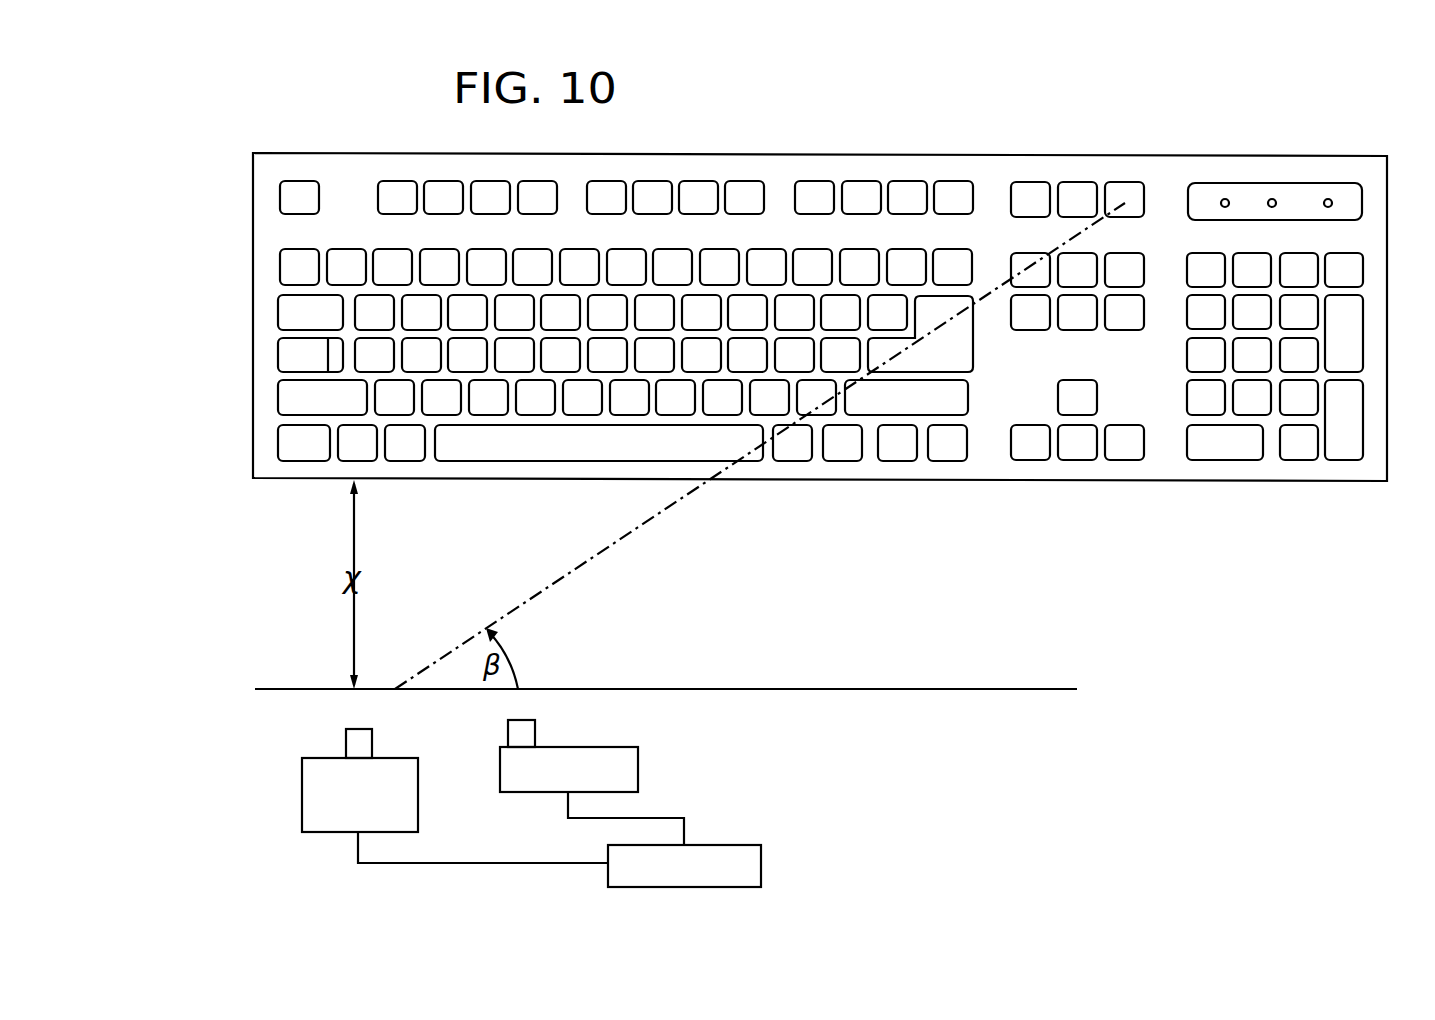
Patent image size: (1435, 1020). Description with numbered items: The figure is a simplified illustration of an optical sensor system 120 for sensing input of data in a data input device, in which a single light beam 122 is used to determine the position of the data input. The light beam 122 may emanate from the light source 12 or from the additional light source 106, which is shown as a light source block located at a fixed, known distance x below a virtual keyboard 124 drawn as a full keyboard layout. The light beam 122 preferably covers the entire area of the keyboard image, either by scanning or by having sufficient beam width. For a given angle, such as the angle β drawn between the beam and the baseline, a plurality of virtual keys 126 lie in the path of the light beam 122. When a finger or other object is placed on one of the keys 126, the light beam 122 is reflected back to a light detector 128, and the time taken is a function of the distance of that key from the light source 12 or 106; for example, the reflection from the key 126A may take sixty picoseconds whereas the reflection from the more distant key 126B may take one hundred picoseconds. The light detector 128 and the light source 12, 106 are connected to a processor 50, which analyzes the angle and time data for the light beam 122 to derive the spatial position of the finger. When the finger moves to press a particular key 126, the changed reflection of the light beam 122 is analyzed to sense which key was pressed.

The optical sensor system 120 is at (1352, 131).
The light beam 122 is at (630, 535).
The virtual keyboard 124 is at (1205, 167).
The virtual keys 126 is at (903, 451).
The key 126A is at (822, 404).
The key 126B is at (1013, 257).
The light detector 128 is at (594, 746).
The processor 50 is at (733, 845).
The light source 12 is at (310, 780).
The additional light source 106 is at (303, 805).